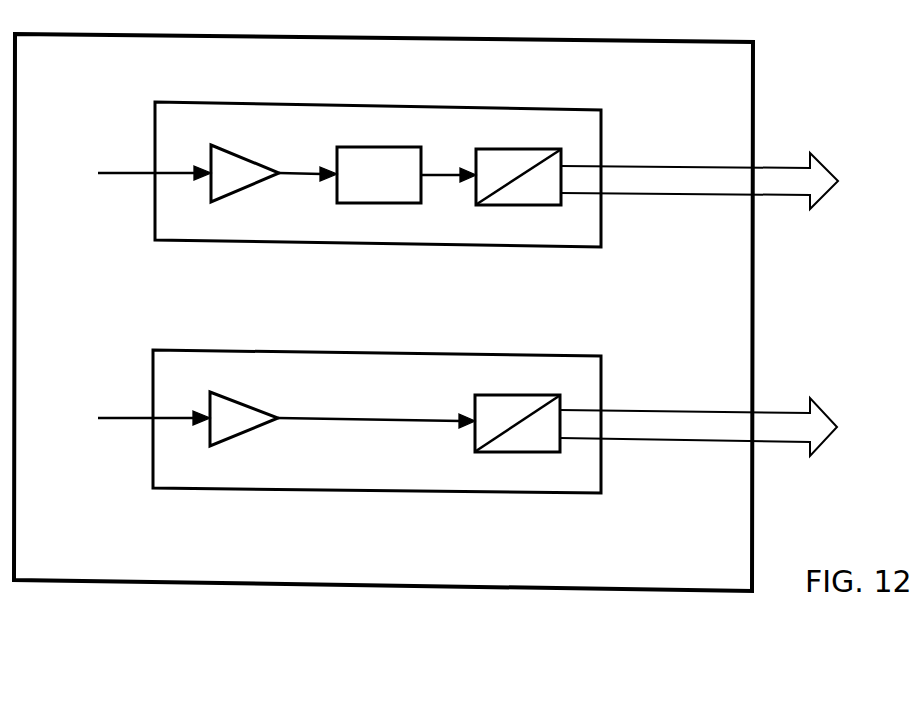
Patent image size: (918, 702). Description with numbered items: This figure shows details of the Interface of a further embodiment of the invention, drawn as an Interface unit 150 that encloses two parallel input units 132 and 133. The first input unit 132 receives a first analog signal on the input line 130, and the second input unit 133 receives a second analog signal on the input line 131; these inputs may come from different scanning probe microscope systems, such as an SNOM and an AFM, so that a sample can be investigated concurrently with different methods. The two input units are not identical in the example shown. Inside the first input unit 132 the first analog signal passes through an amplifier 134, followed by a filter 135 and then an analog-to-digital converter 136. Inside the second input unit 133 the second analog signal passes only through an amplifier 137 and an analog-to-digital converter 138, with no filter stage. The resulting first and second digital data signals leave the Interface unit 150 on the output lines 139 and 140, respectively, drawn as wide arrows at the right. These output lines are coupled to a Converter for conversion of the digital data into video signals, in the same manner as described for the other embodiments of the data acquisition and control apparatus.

The first input signal line z1 130 is at (136, 172).
The second input signal line z2 131 is at (136, 417).
The first input unit 132 is at (558, 115).
The second input unit 133 is at (601, 378).
The amplifier 134 is at (243, 180).
The filter 135 is at (357, 185).
The analog-to-digital converter 136 is at (518, 193).
The amplifier 137 is at (243, 425).
The analog-to-digital converter 138 is at (517, 438).
The output line 139 is at (777, 197).
The output line 140 is at (775, 442).
The Interface unit 150 is at (380, 551).